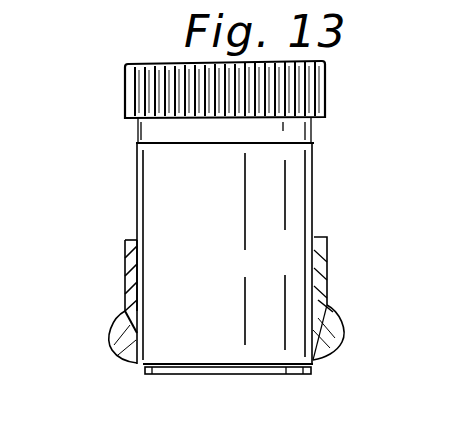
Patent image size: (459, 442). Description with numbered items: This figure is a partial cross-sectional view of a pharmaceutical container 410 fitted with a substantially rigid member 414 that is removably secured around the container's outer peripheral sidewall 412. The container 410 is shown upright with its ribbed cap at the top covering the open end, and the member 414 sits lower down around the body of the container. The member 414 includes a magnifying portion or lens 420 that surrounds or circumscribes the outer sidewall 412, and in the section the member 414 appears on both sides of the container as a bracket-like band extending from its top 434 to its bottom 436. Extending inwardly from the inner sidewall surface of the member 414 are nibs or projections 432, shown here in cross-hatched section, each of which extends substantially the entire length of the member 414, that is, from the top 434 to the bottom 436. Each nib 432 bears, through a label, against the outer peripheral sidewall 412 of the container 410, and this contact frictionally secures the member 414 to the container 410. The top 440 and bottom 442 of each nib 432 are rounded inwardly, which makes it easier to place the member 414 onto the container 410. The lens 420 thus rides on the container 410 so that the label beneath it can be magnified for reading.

The pharmaceutical container 410 is at (108, 86).
The outer peripheral sidewall 412 is at (135, 127).
The substantially rigid member 414 is at (348, 302).
The magnifying portion or lens 420 is at (330, 318).
The nibs or projections 432 is at (127, 271).
The top of the member 434 is at (322, 237).
The bottom of the member 436 is at (320, 356).
The top of the nib 440 is at (137, 240).
The bottom of the nib 442 is at (137, 363).